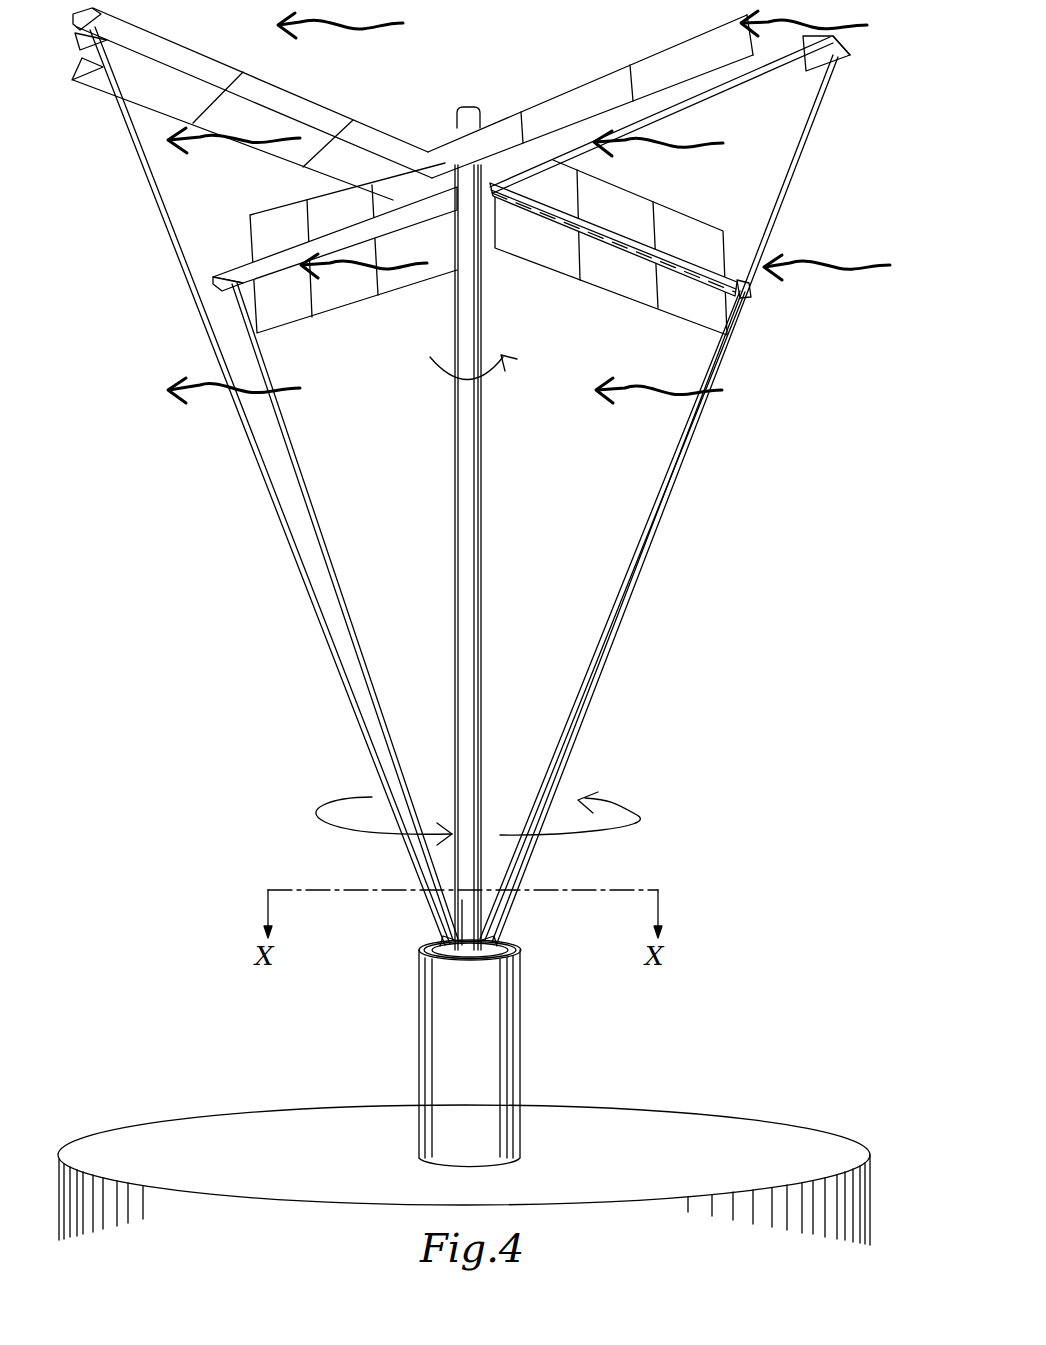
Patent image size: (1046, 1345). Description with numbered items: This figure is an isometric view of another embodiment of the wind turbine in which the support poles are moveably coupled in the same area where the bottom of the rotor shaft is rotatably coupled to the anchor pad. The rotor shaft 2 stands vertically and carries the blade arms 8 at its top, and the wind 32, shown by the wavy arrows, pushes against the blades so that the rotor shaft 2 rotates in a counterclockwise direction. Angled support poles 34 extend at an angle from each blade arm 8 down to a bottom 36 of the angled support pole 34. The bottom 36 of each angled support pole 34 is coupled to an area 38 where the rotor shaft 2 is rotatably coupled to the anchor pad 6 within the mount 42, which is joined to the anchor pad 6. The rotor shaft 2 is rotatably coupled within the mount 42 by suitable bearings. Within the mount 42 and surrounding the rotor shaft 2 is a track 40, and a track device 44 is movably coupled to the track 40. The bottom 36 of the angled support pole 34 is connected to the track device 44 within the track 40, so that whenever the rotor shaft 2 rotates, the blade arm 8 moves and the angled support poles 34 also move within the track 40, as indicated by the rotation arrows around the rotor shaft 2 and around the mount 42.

The rotor shaft 2 is at (470, 549).
The anchor pad 6 is at (633, 1127).
The blade arm 8 is at (72, 18).
The wind 32 is at (350, 33).
The angled support pole 34 is at (300, 449).
The bottom of the angled support pole 36 is at (440, 937).
The area 38 is at (467, 915).
The track 40 is at (463, 960).
The mount 42 is at (503, 1040).
The track device 44 is at (420, 957).